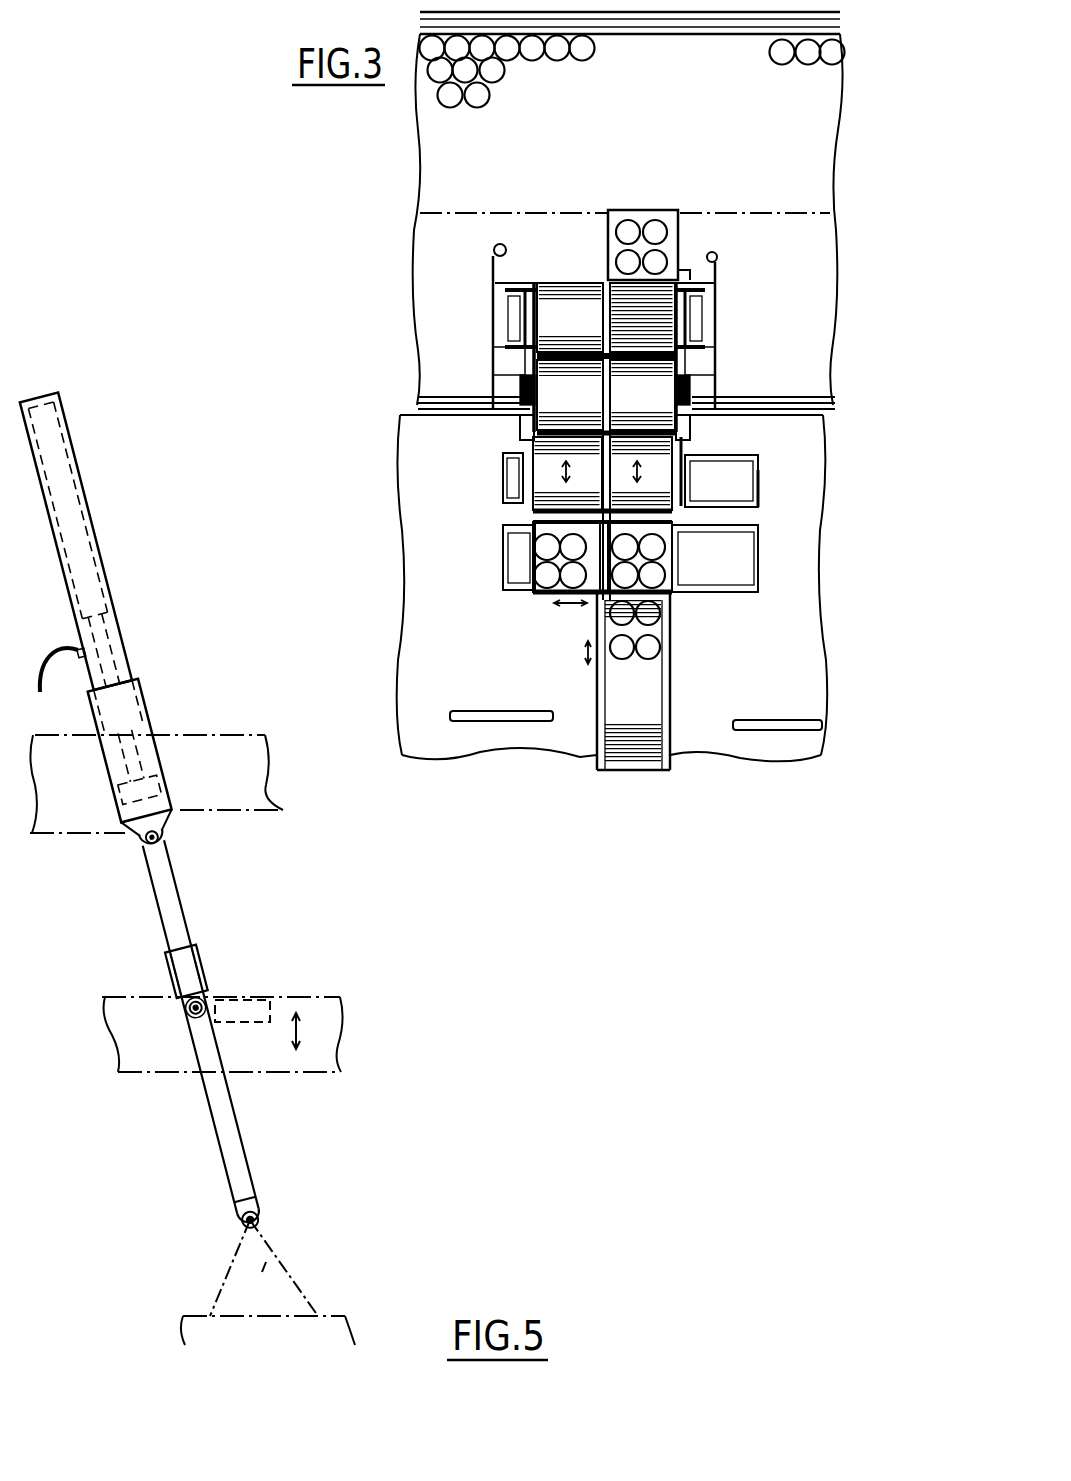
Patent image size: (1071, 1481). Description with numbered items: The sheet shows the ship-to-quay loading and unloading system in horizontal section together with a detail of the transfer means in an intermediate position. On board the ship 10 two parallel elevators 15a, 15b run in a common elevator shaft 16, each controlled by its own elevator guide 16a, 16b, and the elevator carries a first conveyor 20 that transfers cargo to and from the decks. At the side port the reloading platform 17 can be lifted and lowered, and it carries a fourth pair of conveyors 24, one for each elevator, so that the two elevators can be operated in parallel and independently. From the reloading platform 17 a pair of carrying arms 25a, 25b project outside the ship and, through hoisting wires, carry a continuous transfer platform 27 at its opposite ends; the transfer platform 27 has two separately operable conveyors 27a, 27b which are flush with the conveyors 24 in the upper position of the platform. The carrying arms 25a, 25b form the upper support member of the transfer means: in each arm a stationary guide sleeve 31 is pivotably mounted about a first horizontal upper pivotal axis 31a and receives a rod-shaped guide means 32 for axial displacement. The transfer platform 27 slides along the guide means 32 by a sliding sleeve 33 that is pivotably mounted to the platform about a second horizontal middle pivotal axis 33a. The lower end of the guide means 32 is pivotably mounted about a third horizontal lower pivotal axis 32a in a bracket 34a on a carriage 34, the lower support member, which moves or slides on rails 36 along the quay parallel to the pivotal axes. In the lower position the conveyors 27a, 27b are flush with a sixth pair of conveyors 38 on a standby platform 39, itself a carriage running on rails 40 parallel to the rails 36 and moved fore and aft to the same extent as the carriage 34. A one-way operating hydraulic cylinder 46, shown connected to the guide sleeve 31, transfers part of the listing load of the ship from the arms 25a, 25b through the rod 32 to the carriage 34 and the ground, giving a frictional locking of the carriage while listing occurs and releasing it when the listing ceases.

In FIG. 3, the ship 10 is at (812, 335).
In FIG. 3, the elevator 15a is at (688, 290).
In FIG. 3, the elevator 15b is at (500, 275).
In FIG. 3, the elevator shaft 16 is at (503, 365).
In FIG. 3, the elevator guide 16a is at (696, 325).
In FIG. 3, the elevator guide 16b is at (508, 330).
In FIG. 3, the reloading platform 17 is at (683, 395).
In FIG. 3, the first conveyor 20 is at (581, 282).
In FIG. 3, the fourth pair of conveyors 24 is at (520, 395).
In FIG. 3, the carrying arm 25a is at (685, 428).
In FIG. 5, the carrying arm 25a is at (208, 762).
In FIG. 3, the carrying arm 25b is at (525, 423).
In FIG. 3, the transfer platform 27 is at (650, 478).
In FIG. 5, the transfer platform 27 is at (297, 998).
In FIG. 3, the conveyor 27a is at (745, 507).
In FIG. 3, the conveyor 27b is at (540, 478).
In FIG. 5, the guide sleeve 31 is at (143, 717).
In FIG. 5, the upper pivotal axis 31a is at (147, 845).
In FIG. 5, the guide means 32 is at (216, 1124).
In FIG. 5, the lower pivotal axis 32a is at (240, 1222).
In FIG. 5, the sliding sleeve 33 is at (200, 966).
In FIG. 5, the middle pivotal axis 33a is at (212, 1008).
In FIG. 5, the carriage 34 is at (207, 1330).
In FIG. 5, the bracket 34a is at (276, 1248).
In FIG. 3, the rails 36 is at (758, 450).
In FIG. 3, the sixth pair of conveyors 38 is at (540, 563).
In FIG. 3, the standby platform 39 is at (530, 595).
In FIG. 3, the rails 40 is at (735, 548).
In FIG. 5, the hydraulic cylinder 46 is at (94, 547).